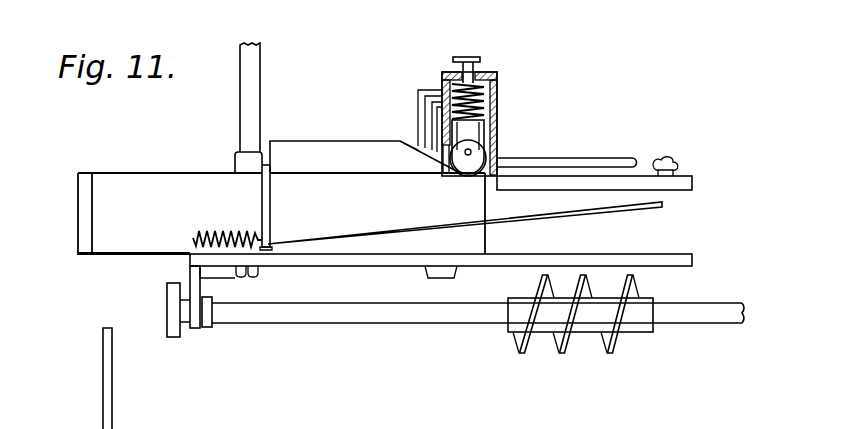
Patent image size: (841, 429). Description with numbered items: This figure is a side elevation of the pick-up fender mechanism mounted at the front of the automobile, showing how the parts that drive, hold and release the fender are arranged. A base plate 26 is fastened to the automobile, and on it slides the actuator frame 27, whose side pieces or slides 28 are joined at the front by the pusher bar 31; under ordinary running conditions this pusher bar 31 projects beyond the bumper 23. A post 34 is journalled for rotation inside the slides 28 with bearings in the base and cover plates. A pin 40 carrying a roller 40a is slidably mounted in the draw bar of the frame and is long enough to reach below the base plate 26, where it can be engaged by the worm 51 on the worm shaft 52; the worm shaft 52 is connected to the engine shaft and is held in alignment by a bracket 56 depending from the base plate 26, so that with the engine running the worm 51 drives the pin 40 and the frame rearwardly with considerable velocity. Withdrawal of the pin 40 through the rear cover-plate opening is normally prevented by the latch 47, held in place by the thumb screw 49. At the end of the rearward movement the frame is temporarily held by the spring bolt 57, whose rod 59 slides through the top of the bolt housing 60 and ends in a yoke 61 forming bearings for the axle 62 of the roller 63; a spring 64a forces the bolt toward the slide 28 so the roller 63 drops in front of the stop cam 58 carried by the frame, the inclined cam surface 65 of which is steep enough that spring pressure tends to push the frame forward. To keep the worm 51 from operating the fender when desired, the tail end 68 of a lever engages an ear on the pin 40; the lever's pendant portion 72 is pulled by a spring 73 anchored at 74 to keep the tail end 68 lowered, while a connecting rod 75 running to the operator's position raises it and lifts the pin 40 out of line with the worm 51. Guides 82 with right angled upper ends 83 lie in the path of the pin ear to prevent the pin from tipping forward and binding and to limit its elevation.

The bumper 23 is at (108, 393).
The base plate 26 is at (692, 262).
The actuator frame 27 is at (108, 255).
The slides 28 is at (140, 246).
The pusher bar 31 is at (78, 222).
The post 34 is at (240, 110).
The pin 40 is at (425, 271).
The roller 40a is at (455, 276).
The latch 47 is at (680, 172).
The thumb screw 49 is at (663, 158).
The worm 51 is at (530, 345).
The worm shaft 52 is at (362, 323).
The bracket 56 is at (195, 328).
The spring bolt 57 is at (480, 130).
The stop cam 58 is at (298, 141).
The rod 59 is at (470, 60).
The bolt housing 60 is at (497, 92).
The yoke 61 is at (483, 143).
The axle 62 is at (471, 155).
The roller 63 is at (466, 173).
The spring 64a is at (442, 74).
The cam surface 65 is at (408, 140).
The tail end 68 is at (573, 158).
The pendant portion 72 is at (262, 200).
The spring 73 is at (255, 246).
The anchor 74 is at (193, 240).
The connecting rod 75 is at (612, 210).
The guides 82 is at (425, 112).
The right angled upper ends 83 is at (418, 90).